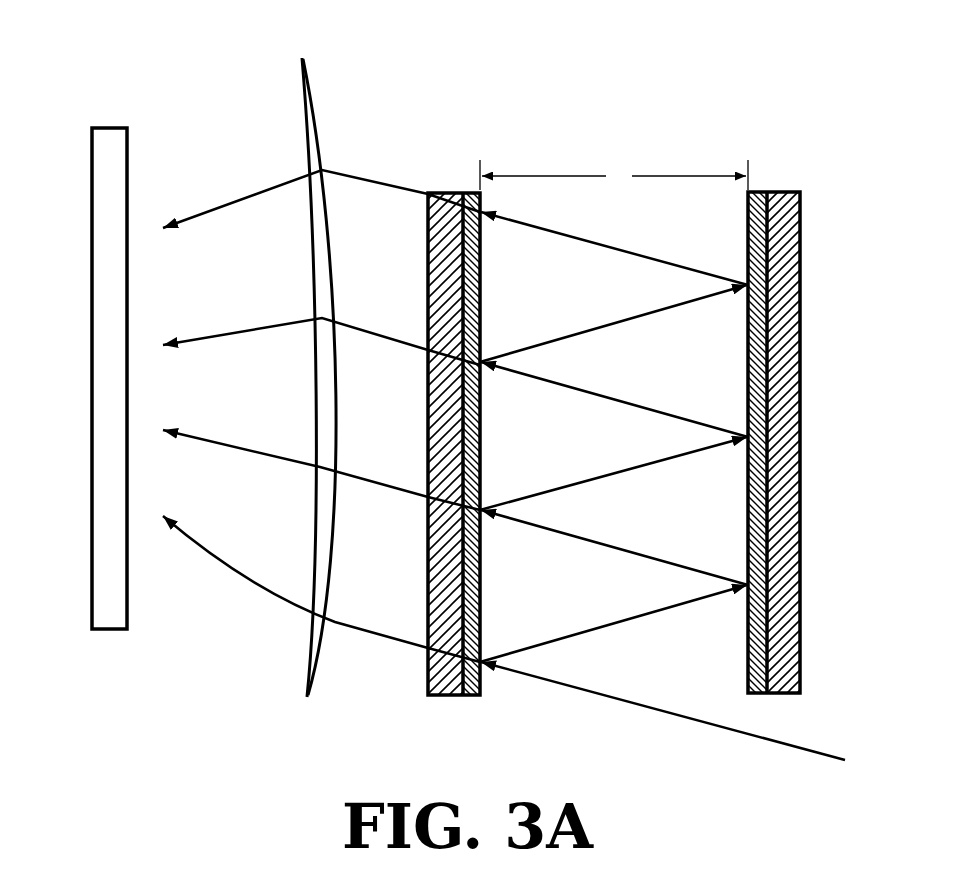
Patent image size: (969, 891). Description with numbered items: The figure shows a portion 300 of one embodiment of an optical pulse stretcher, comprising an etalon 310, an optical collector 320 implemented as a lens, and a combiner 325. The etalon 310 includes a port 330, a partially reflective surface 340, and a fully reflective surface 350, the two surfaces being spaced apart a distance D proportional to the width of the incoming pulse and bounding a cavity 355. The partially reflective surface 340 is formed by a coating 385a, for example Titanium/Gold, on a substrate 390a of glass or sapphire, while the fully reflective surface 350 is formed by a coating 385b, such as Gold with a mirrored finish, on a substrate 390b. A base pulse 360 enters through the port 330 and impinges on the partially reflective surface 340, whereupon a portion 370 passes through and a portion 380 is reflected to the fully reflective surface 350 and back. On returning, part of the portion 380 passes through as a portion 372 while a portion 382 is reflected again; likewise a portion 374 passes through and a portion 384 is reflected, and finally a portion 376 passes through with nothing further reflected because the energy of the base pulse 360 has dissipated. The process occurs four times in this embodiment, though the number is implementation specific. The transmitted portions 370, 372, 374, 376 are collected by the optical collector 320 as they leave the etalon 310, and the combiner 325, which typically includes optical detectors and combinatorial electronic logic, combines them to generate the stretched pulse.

The portion of the optical pulse stretcher 300 is at (173, 40).
The etalon 310 is at (525, 100).
The optical collector 320 is at (288, 78).
The combiner 325 is at (101, 113).
The port 330 is at (578, 718).
The partially reflective surface 340 is at (452, 190).
The fully reflective surface 350 is at (770, 190).
The cavity 355 is at (653, 289).
The base pulse 360 is at (762, 733).
The portion of the base pulse 370 is at (415, 645).
The portion of the base pulse 372 is at (422, 495).
The portion of the base pulse 374 is at (422, 350).
The portion of the base pulse 376 is at (422, 218).
The reflected portion of the base pulse 380 is at (599, 540).
The reflected portion of the base pulse 382 is at (598, 390).
The reflected portion of the base pulse 384 is at (598, 242).
The coating 385a is at (460, 480).
The coating 385b is at (805, 444).
The substrate 390a is at (472, 452).
The substrate 390b is at (805, 470).